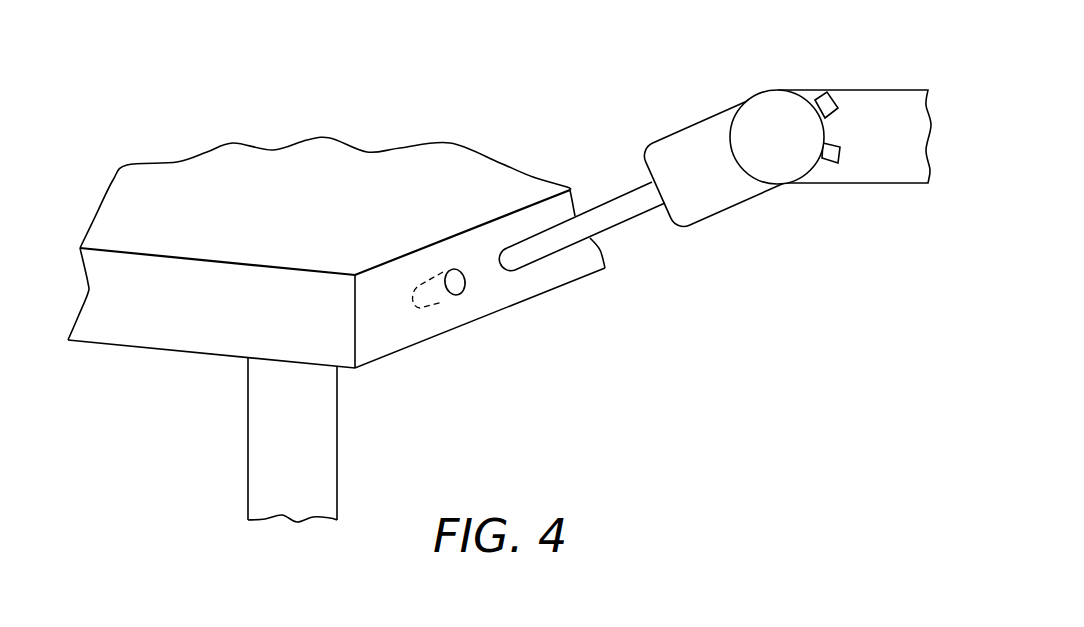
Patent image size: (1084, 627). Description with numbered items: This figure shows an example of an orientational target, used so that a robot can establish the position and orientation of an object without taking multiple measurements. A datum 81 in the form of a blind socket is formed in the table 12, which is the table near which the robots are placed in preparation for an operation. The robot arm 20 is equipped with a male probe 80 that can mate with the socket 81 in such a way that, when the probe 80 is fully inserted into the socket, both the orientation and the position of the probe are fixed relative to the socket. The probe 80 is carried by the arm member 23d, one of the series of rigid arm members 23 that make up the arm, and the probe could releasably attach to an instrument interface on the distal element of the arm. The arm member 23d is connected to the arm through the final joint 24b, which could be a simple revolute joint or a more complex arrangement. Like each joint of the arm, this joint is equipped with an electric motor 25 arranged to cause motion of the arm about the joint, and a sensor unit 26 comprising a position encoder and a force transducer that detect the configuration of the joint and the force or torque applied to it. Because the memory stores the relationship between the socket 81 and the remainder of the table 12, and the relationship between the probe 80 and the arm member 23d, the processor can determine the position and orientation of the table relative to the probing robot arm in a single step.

The table 12 is at (303, 162).
The arm 20 is at (785, 158).
The rigid arm members 23 is at (902, 98).
The arm member 23d is at (682, 138).
The final joint 24b is at (773, 98).
The electric motor 25 is at (827, 93).
The sensor unit 26 is at (843, 155).
The male probe 80 is at (627, 215).
The datum 81 is at (442, 304).